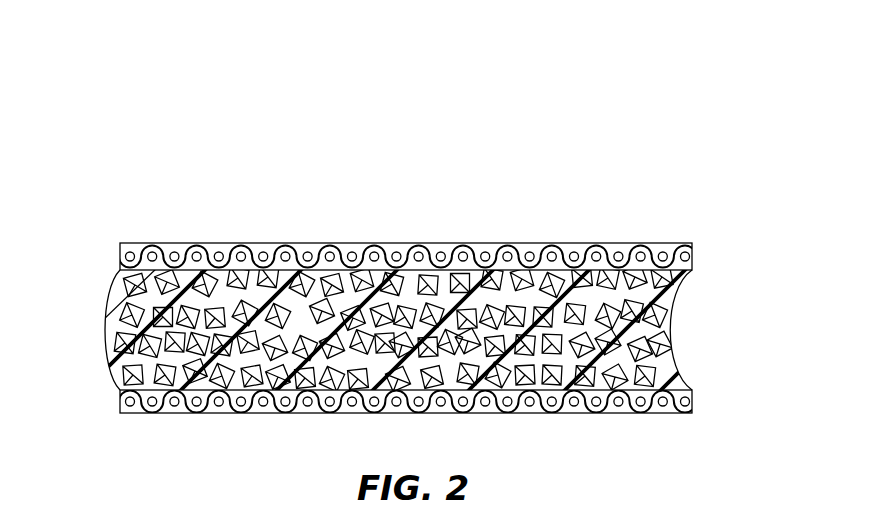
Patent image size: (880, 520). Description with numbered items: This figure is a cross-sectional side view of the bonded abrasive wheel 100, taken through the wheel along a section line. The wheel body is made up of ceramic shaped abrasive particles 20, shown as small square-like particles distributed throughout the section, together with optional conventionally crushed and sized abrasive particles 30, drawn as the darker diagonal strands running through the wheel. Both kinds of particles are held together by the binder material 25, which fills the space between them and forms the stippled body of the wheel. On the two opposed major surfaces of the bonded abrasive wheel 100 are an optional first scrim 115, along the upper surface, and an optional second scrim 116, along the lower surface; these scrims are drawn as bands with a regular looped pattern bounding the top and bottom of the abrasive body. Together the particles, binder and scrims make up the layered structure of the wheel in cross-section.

The bonded abrasive wheel 100 is at (708, 204).
The first scrim 115 is at (304, 248).
The second scrim 116 is at (207, 398).
The binder material 25 is at (107, 318).
The conventionally crushed and sized abrasive particles 30 is at (205, 278).
The ceramic shaped abrasive particles 20 is at (577, 278).